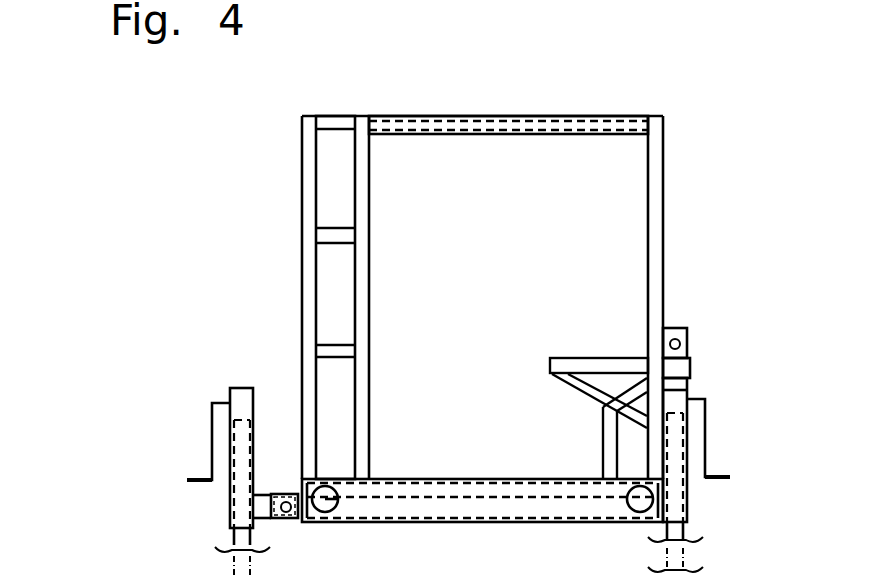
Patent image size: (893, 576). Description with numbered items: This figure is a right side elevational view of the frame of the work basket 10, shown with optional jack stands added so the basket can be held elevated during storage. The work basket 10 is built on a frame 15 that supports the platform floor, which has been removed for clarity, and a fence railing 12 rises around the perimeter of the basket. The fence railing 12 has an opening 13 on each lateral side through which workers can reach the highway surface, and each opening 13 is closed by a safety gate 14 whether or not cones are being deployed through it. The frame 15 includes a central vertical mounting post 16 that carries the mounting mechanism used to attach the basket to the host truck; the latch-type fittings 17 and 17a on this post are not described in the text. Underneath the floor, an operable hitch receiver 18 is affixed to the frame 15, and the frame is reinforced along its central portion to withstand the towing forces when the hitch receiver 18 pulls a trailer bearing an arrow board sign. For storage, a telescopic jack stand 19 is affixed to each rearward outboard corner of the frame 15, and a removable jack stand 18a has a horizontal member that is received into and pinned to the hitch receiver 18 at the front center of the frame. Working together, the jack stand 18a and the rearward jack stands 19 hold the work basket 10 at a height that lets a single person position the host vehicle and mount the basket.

The work basket 10 is at (734, 109).
The fence railing 12 is at (302, 172).
The opening 13 is at (508, 79).
The safety gate 14 is at (519, 118).
The frame 15 is at (482, 522).
The central vertical mounting post 16 is at (745, 289).
The latch block 17 is at (745, 317).
The latch pin hole 17a is at (681, 345).
The hitch receiver 18 is at (285, 494).
The removable jack stand 18a is at (241, 450).
The jack stand 19 is at (677, 453).